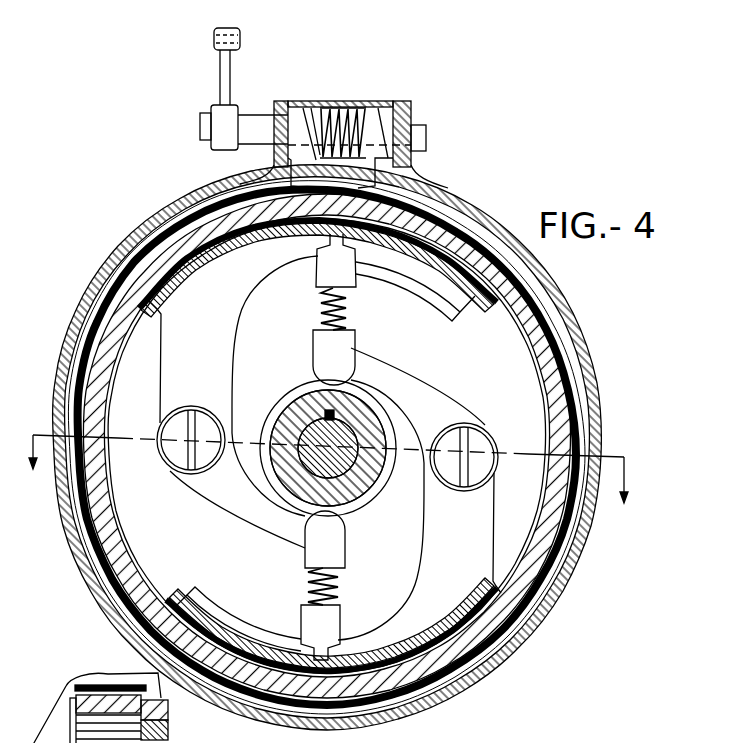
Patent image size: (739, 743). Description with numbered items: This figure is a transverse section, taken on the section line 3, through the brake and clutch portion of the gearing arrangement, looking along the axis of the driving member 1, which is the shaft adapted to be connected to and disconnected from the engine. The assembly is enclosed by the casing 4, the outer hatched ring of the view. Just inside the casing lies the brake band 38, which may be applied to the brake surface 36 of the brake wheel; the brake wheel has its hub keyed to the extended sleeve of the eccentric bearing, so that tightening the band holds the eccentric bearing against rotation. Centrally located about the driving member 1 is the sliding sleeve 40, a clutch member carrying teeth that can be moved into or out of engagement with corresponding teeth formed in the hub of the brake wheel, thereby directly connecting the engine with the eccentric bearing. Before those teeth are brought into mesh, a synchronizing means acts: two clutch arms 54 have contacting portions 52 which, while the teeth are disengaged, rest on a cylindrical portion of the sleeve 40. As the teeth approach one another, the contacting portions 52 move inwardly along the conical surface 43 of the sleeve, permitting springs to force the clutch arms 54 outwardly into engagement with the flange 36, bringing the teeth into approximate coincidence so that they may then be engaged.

The driving member 1 is at (343, 457).
The section line 3- 3 is at (328, 479).
The casing 4 is at (573, 355).
The brake surface 36 is at (378, 213).
The brake band 38 is at (580, 412).
The sliding sleeve 40 is at (282, 403).
The conical surface 43 is at (360, 487).
The contacting portions 52 is at (308, 352).
The clutch arms 54 is at (452, 304).